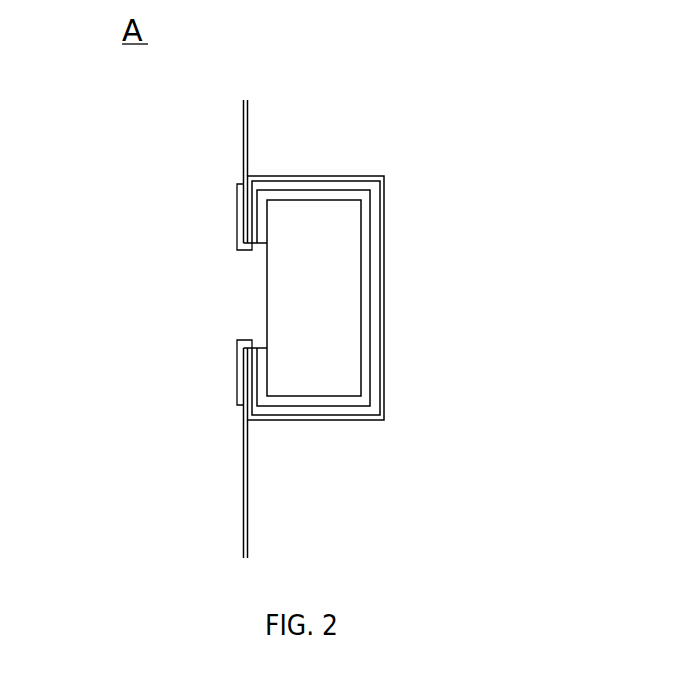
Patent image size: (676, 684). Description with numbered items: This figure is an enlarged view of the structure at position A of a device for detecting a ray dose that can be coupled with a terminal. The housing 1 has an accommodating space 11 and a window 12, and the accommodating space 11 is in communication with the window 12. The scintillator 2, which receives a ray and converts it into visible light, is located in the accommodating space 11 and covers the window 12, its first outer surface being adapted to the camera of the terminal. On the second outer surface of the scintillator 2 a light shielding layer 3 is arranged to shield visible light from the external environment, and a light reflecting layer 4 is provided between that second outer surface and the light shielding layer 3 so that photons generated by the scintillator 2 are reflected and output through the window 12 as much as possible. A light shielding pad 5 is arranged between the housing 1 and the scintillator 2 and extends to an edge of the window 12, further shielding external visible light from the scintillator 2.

The housing 1 is at (186, 332).
The scintillator 2 is at (382, 298).
The light shielding layer 3 is at (380, 298).
The light reflecting layer 4 is at (387, 315).
The light shielding pad 5 is at (176, 318).
The accommodating space 11 is at (357, 362).
The window 12 is at (181, 311).